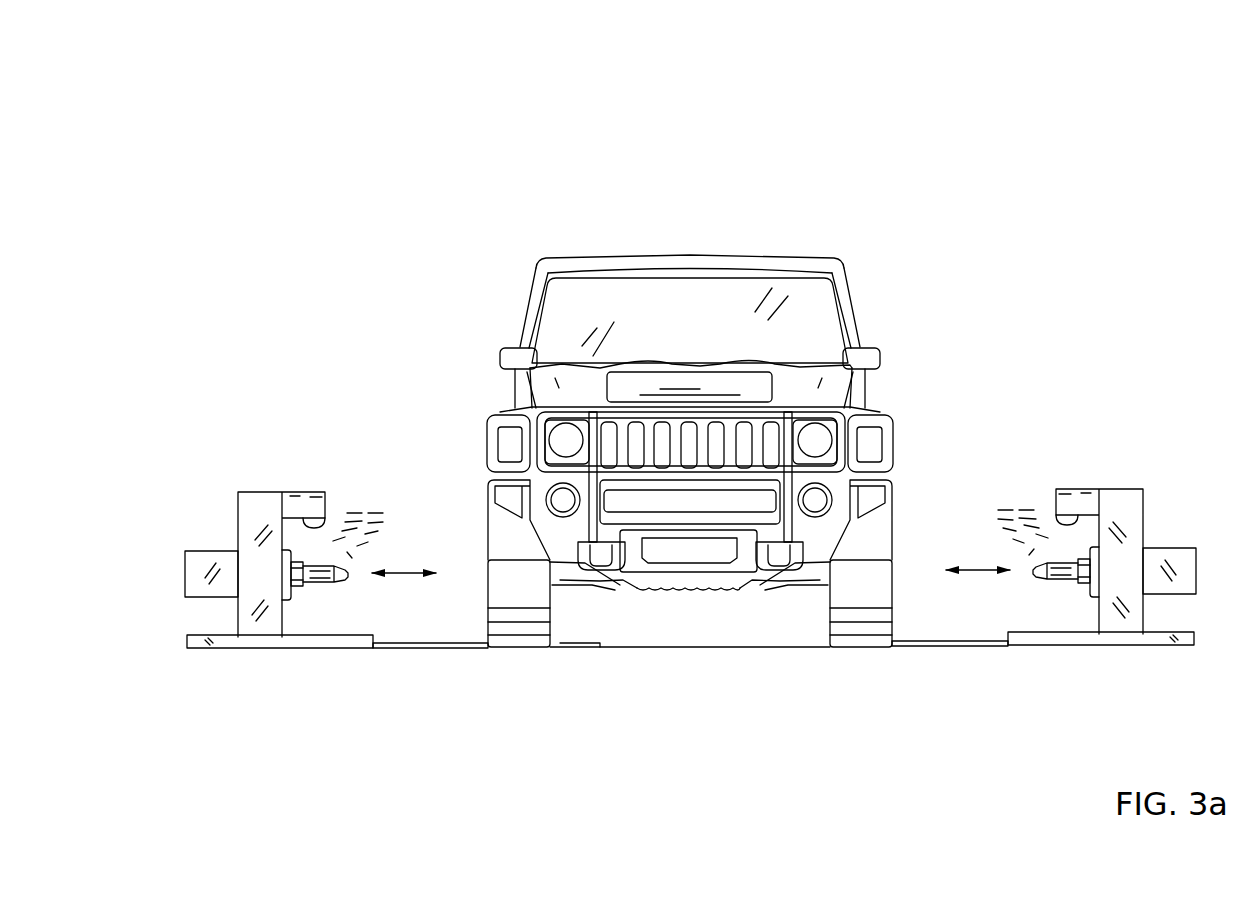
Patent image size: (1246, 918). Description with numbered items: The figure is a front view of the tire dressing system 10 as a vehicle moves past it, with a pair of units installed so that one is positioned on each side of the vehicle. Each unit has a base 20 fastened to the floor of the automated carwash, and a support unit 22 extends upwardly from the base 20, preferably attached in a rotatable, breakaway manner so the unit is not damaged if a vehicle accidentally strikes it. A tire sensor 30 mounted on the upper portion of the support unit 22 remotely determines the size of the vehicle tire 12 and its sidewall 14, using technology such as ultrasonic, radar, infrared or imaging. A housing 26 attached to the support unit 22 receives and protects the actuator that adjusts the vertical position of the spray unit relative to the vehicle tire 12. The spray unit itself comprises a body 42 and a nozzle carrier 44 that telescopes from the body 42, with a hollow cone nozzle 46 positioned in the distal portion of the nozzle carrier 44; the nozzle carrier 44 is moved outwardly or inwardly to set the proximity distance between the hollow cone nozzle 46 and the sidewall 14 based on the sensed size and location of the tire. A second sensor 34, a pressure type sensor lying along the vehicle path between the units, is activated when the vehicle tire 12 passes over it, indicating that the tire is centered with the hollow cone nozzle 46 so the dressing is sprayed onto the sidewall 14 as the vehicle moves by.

The tire dressing system 10 is at (255, 140).
The vehicle tire 12 is at (508, 648).
The sidewall 14 is at (488, 527).
The base 20 is at (192, 650).
The support unit 22 is at (238, 528).
The housing 26 is at (205, 553).
The tire sensor 30 is at (312, 522).
The second sensor 34 is at (425, 652).
The body 42 is at (298, 598).
The nozzle carrier 44 is at (327, 585).
The hollow cone nozzle 46 is at (1035, 571).